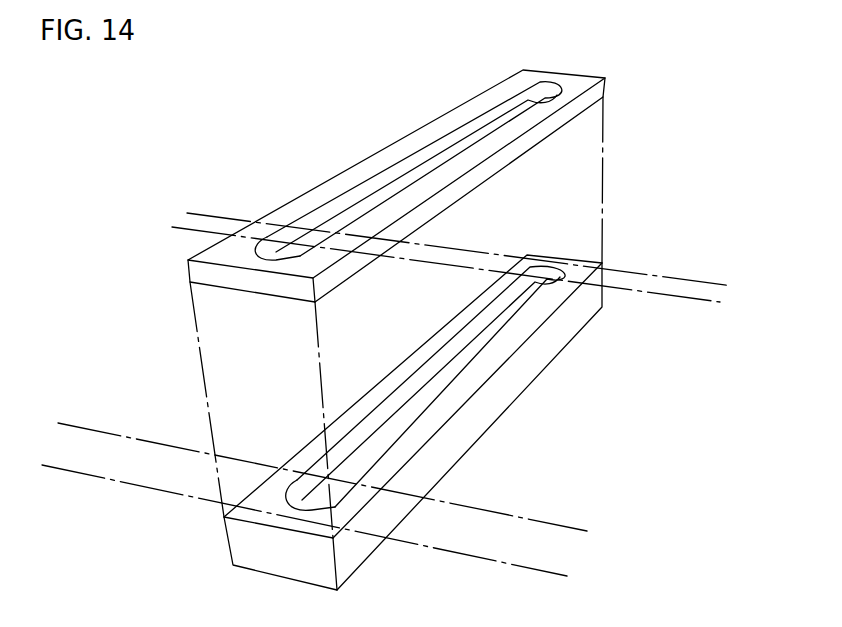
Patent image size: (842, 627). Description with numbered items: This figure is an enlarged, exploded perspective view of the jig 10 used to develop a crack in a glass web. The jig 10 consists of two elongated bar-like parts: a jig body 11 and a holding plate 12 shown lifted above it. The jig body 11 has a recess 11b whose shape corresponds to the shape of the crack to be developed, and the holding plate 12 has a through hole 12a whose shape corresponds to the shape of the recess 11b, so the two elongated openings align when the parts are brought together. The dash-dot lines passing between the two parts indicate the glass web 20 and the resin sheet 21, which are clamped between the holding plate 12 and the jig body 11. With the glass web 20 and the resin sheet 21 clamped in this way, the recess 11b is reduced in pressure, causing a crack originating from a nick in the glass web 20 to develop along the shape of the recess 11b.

The jig 10 is at (615, 258).
The jig body 11 is at (576, 328).
The recess 11b is at (483, 348).
The holding plate 12 is at (606, 79).
The through hole 12a is at (515, 113).
The glass web 20 is at (688, 297).
The resin sheet 21 is at (648, 272).